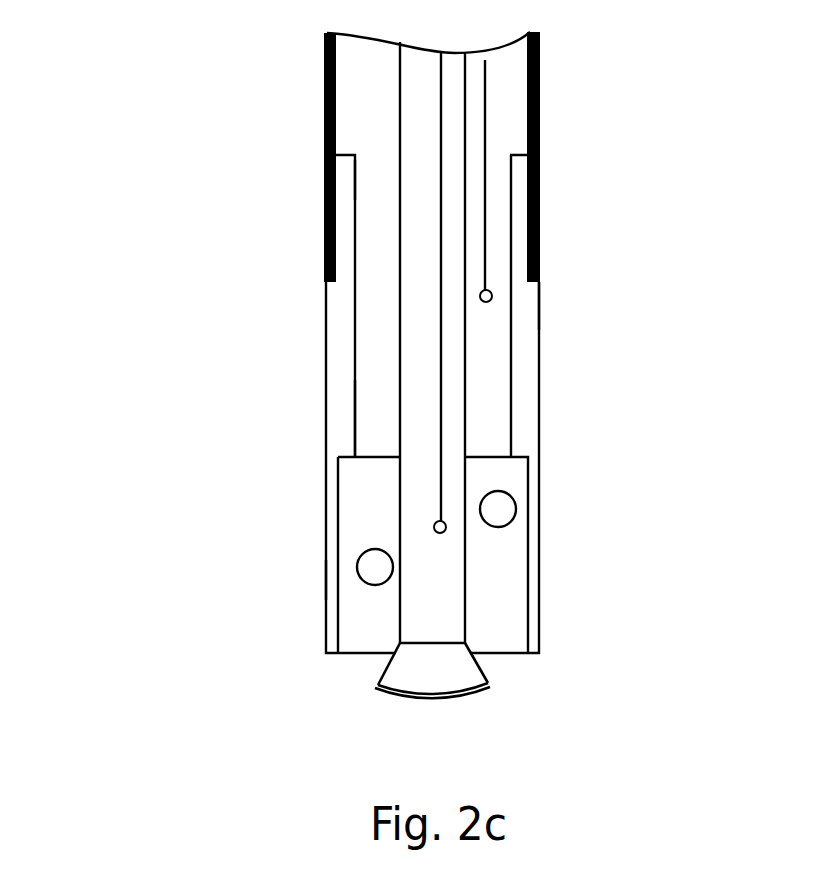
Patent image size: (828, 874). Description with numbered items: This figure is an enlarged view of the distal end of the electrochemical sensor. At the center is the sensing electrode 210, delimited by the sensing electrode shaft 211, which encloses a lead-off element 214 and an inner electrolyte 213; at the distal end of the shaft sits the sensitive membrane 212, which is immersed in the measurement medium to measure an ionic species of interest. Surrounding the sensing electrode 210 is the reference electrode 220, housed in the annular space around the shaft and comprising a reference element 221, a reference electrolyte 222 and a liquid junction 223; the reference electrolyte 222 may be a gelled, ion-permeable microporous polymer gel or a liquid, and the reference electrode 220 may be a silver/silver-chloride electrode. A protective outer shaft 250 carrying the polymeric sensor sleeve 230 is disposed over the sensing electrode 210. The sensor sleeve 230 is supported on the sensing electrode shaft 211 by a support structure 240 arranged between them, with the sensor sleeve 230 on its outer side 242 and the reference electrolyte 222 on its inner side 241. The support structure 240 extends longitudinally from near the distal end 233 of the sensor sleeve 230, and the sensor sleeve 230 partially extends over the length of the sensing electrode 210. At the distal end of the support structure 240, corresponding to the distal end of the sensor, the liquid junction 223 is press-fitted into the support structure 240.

The sensing electrode 210 is at (665, 120).
The sensing electrode shaft 211 is at (467, 123).
The sensitive membrane 212 is at (433, 693).
The inner electrolyte 213 is at (430, 196).
The lead-off element 214 is at (442, 252).
The reference electrode 220 is at (163, 360).
The reference element 221 is at (480, 299).
The reference electrolyte 222 is at (390, 422).
The liquid junction 223 is at (372, 566).
The sensor sleeve 230 is at (324, 137).
The distal end of the sensor sleeve 233 is at (537, 285).
The support structure 240 is at (342, 313).
The inner side of the support structure 241 is at (350, 222).
The outer side of the support structure 242 is at (324, 252).
The protective outer shaft 250 is at (323, 576).